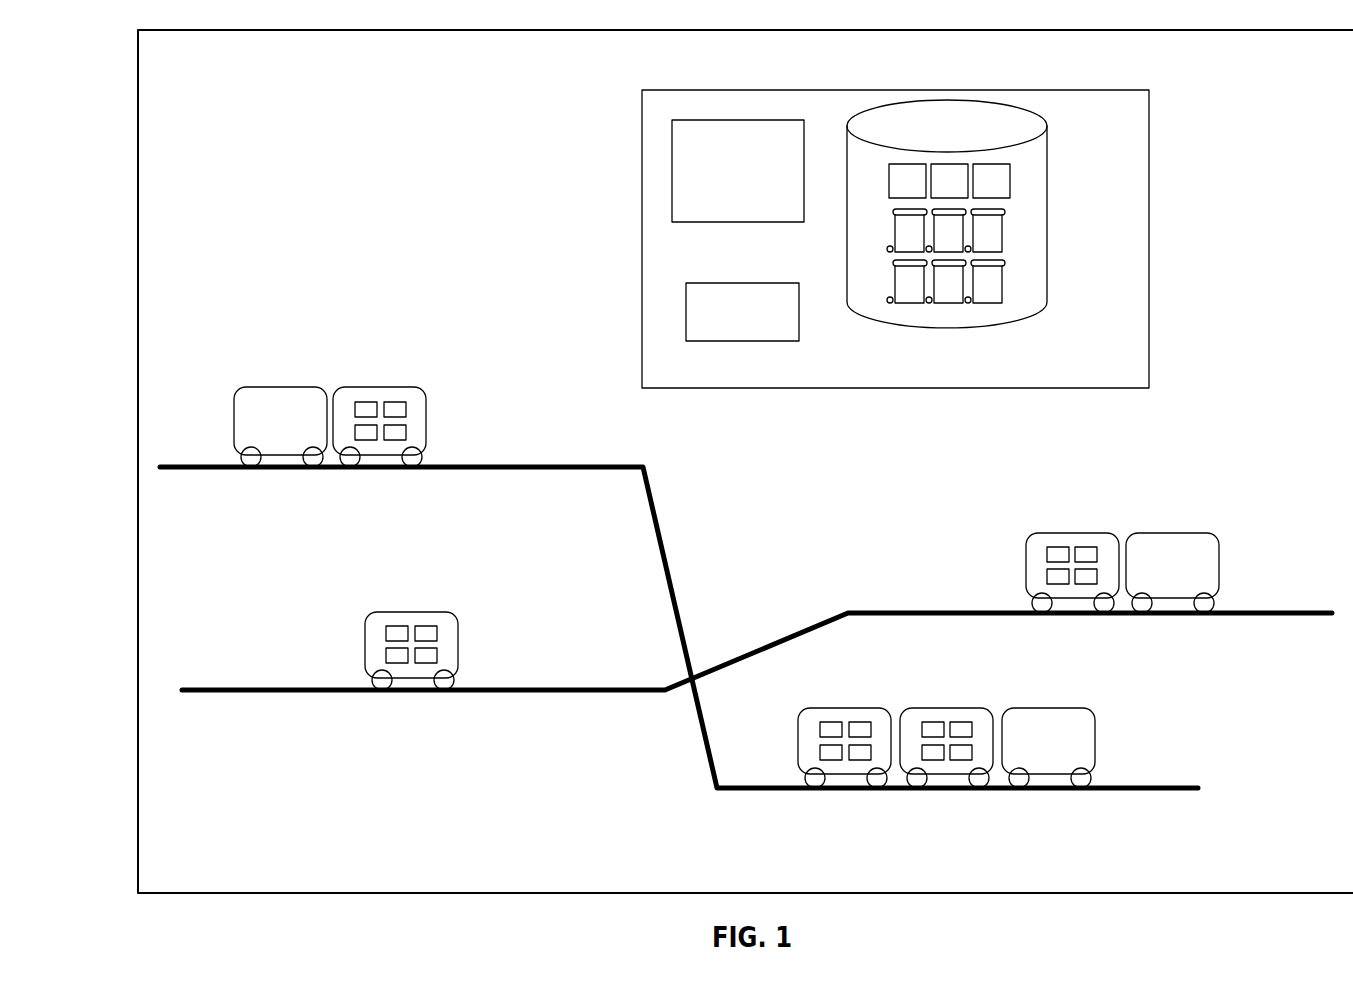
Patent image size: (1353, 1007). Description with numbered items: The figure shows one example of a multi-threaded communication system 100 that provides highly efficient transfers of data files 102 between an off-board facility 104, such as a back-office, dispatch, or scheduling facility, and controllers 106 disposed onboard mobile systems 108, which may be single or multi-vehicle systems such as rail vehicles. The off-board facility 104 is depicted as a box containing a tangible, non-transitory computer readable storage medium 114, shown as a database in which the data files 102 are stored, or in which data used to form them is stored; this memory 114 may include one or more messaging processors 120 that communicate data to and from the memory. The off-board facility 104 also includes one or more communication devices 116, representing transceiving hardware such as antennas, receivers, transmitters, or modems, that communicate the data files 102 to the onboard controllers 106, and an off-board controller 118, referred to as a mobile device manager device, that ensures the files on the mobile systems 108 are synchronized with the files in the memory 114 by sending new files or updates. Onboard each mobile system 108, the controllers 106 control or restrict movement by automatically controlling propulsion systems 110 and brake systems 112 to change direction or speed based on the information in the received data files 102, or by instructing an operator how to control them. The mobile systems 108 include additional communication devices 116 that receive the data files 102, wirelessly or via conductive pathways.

The multi-threaded communication system 100 is at (397, 110).
The data files 102 is at (1003, 233).
The off-board facility 104 is at (1149, 238).
The controllers 106 is at (394, 401).
The mobile systems 108 is at (427, 478).
The propulsion systems 110 is at (406, 433).
The brake systems 112 is at (355, 432).
The computer readable storage medium 114 is at (1047, 256).
The communication devices 116 is at (738, 120).
The off-board controller 118 is at (686, 309).
The messaging processors 120 is at (1010, 180).